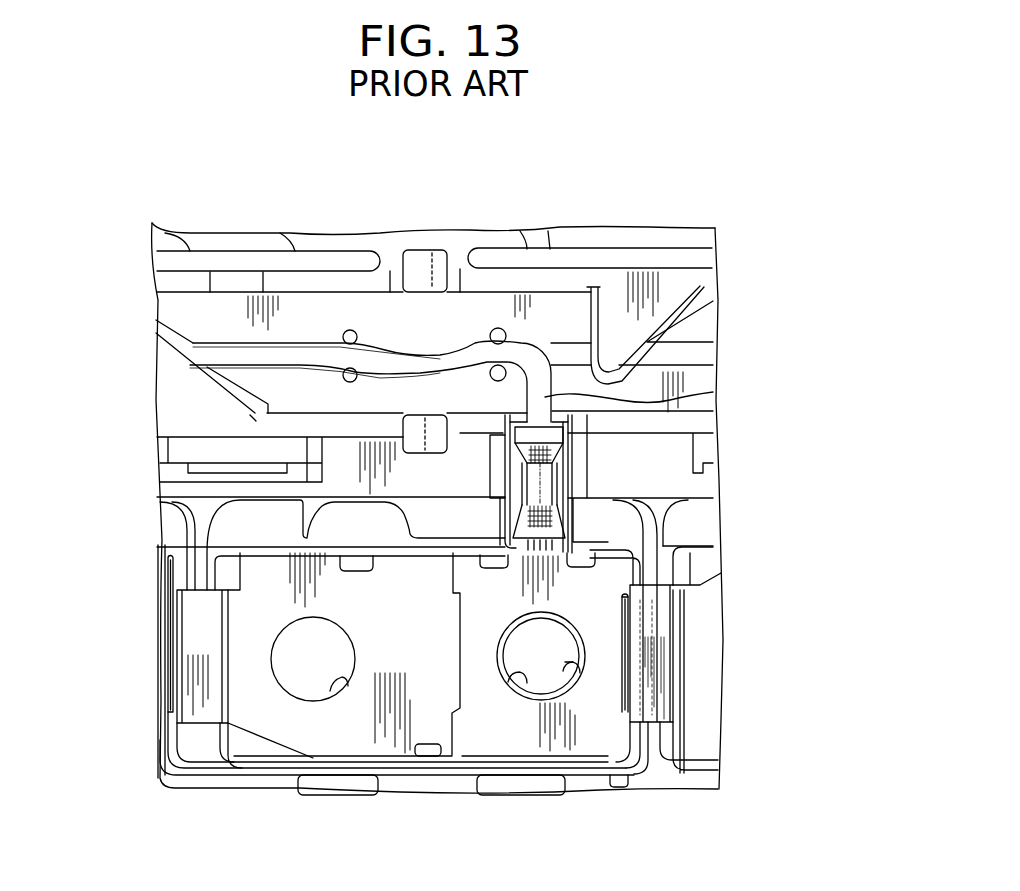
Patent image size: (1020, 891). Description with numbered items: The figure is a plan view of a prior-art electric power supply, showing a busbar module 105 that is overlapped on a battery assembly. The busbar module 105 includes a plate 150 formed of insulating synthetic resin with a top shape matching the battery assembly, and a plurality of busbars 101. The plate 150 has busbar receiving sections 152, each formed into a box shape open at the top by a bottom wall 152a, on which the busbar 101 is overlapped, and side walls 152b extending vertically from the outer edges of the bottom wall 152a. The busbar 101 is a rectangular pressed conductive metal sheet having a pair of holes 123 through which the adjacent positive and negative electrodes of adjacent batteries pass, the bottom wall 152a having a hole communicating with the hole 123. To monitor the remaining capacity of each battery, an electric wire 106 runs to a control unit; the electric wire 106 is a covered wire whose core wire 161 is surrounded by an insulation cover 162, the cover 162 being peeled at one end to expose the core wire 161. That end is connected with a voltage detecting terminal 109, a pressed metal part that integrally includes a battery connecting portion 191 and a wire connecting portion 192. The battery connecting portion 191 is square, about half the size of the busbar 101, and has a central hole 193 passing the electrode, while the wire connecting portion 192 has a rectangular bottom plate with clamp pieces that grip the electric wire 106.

The busbar module 105 is at (706, 165).
The plate 150 is at (718, 240).
The electric wire 106 is at (556, 335).
The insulation cover 162 is at (700, 394).
The core wire 161 is at (587, 455).
The wire connecting portion 192 is at (587, 483).
The voltage detecting terminal 109 is at (605, 576).
The battery connecting portion 191 is at (602, 646).
The hole 193 is at (565, 663).
The side wall 152b is at (268, 553).
The bottom wall 152a is at (238, 747).
The busbar 101 is at (276, 742).
The busbar receiving section 152 is at (297, 790).
The hole 123 is at (340, 675).